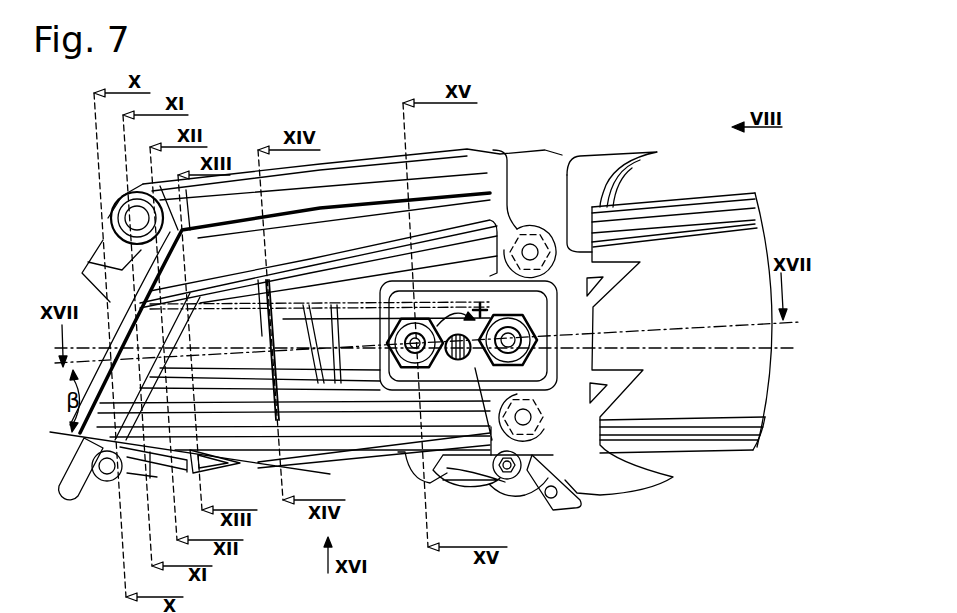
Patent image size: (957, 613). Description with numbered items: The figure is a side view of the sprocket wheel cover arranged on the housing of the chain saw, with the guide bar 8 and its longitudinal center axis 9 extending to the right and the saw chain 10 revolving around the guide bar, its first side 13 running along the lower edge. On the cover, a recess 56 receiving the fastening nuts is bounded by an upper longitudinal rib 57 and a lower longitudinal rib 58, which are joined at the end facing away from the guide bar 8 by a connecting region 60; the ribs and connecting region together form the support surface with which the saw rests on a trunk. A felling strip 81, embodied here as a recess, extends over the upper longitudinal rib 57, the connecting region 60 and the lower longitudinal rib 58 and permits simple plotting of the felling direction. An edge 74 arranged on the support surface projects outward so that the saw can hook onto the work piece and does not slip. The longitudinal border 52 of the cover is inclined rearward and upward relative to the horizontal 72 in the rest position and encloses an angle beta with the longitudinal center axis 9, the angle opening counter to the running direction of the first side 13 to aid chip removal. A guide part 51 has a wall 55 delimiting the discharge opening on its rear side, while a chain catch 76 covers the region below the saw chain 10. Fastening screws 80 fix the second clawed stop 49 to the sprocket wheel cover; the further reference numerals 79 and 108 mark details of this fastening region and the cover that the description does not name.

The guide bar 8 is at (748, 243).
The longitudinal center axis 9 is at (726, 322).
The saw chain 10 is at (703, 200).
The first side 13 is at (692, 443).
The second clawed stop 49 is at (598, 150).
The guide part 51 is at (77, 477).
The longitudinal border 52 is at (178, 470).
The wall 55 is at (112, 483).
The recess 56 is at (512, 480).
The upper longitudinal rib 57 is at (455, 265).
The lower longitudinal rib 58 is at (415, 403).
The connecting region 60 is at (247, 377).
The horizontal 72 is at (745, 345).
The edge 74 is at (369, 400).
The chain catch 76 is at (465, 482).
The pin 79 is at (530, 244).
The fastening screws 80 is at (547, 243).
The felling strip 81 is at (273, 280).
The support wall 108 is at (447, 455).